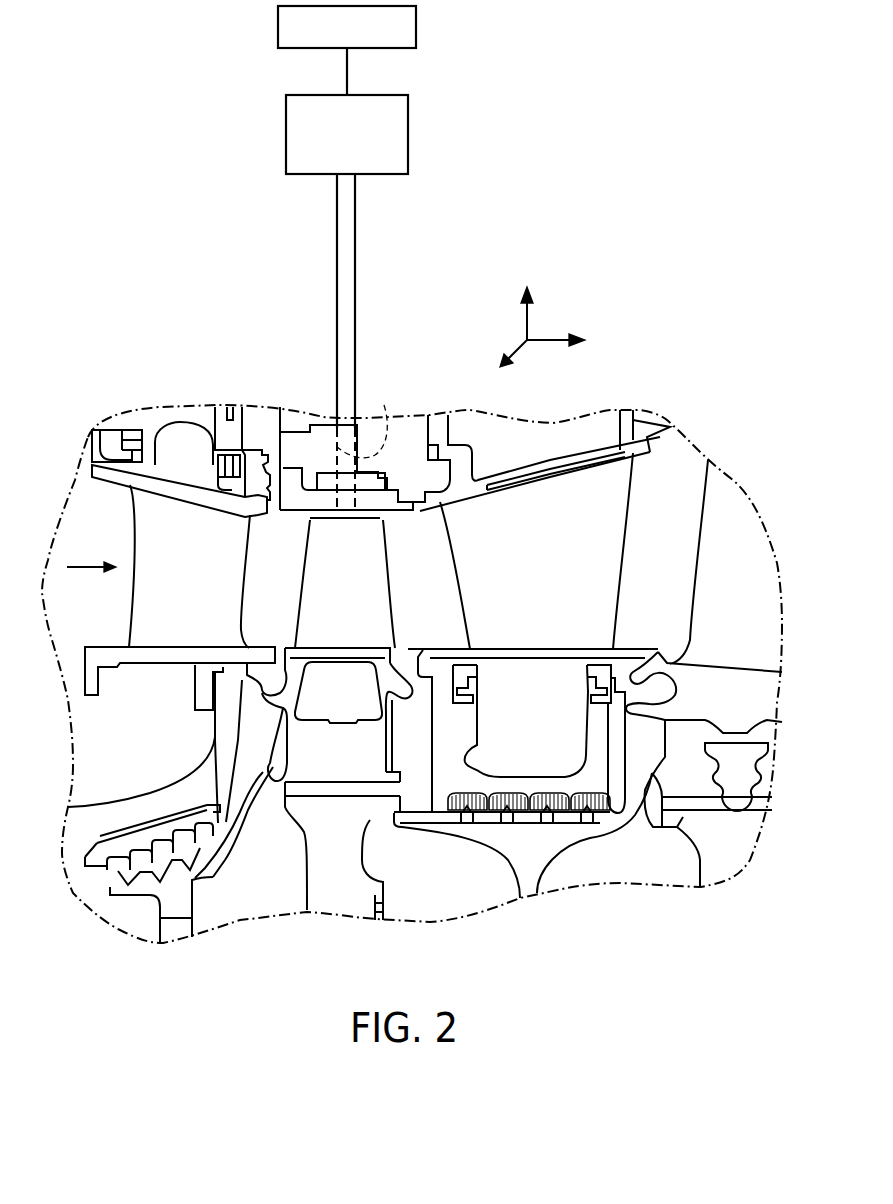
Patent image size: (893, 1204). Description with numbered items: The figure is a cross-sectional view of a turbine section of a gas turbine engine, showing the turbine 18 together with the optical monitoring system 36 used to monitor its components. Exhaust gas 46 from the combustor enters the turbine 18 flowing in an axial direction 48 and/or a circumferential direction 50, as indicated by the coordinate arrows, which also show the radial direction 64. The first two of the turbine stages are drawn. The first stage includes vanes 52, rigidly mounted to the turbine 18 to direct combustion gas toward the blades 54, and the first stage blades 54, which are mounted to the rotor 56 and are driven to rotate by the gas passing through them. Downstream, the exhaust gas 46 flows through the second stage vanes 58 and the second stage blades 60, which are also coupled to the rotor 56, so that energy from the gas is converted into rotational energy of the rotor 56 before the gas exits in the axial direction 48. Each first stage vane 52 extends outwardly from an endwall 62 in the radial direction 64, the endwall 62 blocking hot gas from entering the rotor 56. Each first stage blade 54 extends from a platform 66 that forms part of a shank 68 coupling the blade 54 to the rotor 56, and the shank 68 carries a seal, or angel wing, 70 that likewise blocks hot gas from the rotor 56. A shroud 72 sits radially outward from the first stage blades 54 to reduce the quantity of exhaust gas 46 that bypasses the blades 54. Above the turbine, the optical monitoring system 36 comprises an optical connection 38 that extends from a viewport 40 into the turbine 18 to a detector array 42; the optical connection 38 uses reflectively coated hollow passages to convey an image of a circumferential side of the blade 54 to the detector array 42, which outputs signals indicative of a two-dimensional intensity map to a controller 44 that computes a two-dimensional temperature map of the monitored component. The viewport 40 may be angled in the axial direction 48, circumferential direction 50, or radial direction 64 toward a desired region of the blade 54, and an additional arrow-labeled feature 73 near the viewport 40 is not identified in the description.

The turbine 18 is at (525, 432).
The optical monitoring system 36 is at (531, 128).
The optical connection 38 is at (357, 276).
The viewport 40 is at (383, 408).
The detector array 42 is at (410, 130).
The controller 44 is at (418, 22).
The exhaust gas 46 is at (86, 563).
The axial direction 48 is at (549, 338).
The circumferential direction 50 is at (519, 350).
The first stage vanes 52 is at (174, 568).
The first stage blades 54 is at (335, 586).
The rotor 56 is at (317, 766).
The second stage vanes 58 is at (527, 563).
The second stage blades 60 is at (727, 568).
The endwall 62 is at (258, 658).
The radial direction 64 is at (525, 326).
The platform 66 is at (340, 656).
The shank 68 is at (290, 688).
The seal (angel wing) 70 is at (396, 686).
The shroud 72 is at (296, 506).
The probe housing 73 is at (304, 432).